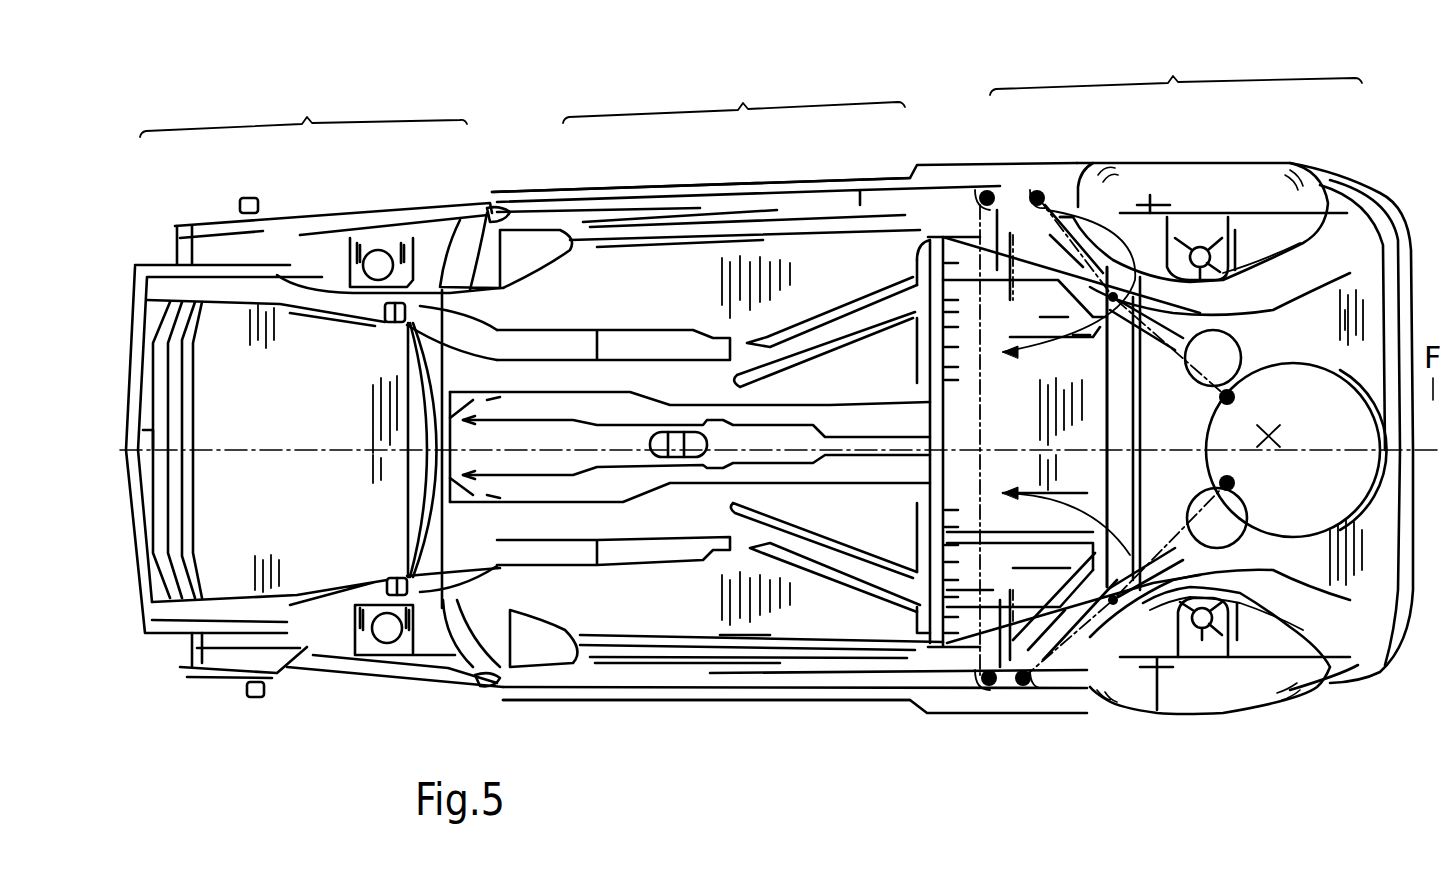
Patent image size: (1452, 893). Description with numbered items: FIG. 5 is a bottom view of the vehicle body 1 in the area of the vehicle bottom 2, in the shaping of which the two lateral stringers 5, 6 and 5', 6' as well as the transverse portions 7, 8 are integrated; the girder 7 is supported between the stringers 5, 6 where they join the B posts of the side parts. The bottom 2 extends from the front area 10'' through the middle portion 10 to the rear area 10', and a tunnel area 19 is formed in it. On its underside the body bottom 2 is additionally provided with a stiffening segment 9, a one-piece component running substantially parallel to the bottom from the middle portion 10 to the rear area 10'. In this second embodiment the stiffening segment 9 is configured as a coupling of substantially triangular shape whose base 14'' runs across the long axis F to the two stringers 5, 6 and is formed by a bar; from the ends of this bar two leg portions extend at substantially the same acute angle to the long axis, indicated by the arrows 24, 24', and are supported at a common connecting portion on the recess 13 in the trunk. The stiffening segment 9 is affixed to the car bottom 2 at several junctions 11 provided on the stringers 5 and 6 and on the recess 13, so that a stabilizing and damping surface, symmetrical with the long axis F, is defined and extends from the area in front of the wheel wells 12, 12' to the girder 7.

The vehicle body 1 is at (1333, 67).
The vehicle bottom 2 is at (650, 277).
The lateral stringer 5 is at (701, 163).
The lateral stringer 5' is at (613, 307).
The lateral stringer 6 is at (706, 728).
The lateral stringer 6' is at (613, 575).
The transverse portion (girder) 7 is at (928, 240).
The transverse portion 8 is at (1142, 320).
The stiffening segment 9 is at (1108, 272).
The middle portion of the bottom 10 is at (734, 96).
The rear area of the car body 10' is at (1176, 71).
The front area of the body 10'' is at (303, 110).
The junctions 11 is at (987, 190).
The wheel well 12 is at (1205, 210).
The wheel well 12' is at (1220, 680).
The recess in the trunk 13 is at (1320, 483).
The base of the coupling 14'' is at (962, 390).
The tunnel area 19 is at (628, 425).
The arrow indicating acute angle 24 is at (1066, 557).
The arrow indicating angle 24' is at (1069, 302).